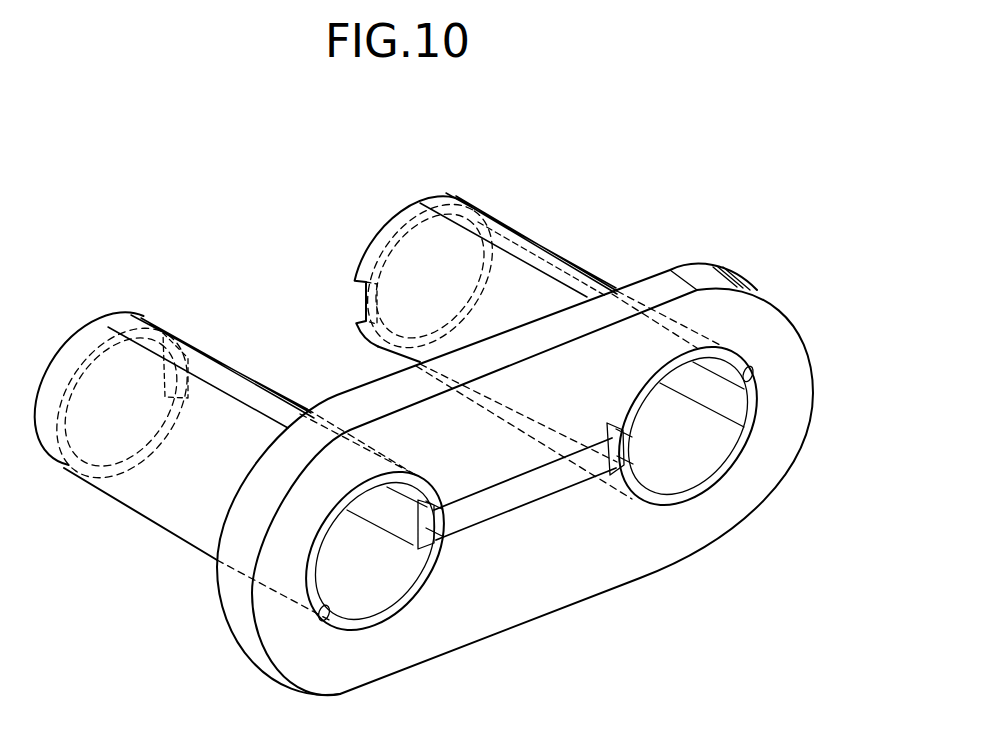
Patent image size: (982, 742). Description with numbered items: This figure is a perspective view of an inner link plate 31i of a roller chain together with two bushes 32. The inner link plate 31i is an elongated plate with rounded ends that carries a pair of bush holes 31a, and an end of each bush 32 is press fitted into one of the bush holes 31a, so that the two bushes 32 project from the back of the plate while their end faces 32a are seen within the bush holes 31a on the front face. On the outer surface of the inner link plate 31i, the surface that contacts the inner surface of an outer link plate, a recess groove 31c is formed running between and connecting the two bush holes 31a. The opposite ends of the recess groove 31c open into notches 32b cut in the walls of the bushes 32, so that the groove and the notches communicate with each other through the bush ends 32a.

The bush 32 is at (228, 358).
The bushing end ring 32a is at (377, 595).
The notch 32b is at (415, 546).
The bush hole 31a is at (332, 625).
The recess groove 31c is at (528, 487).
The inner link plate 31i is at (620, 587).